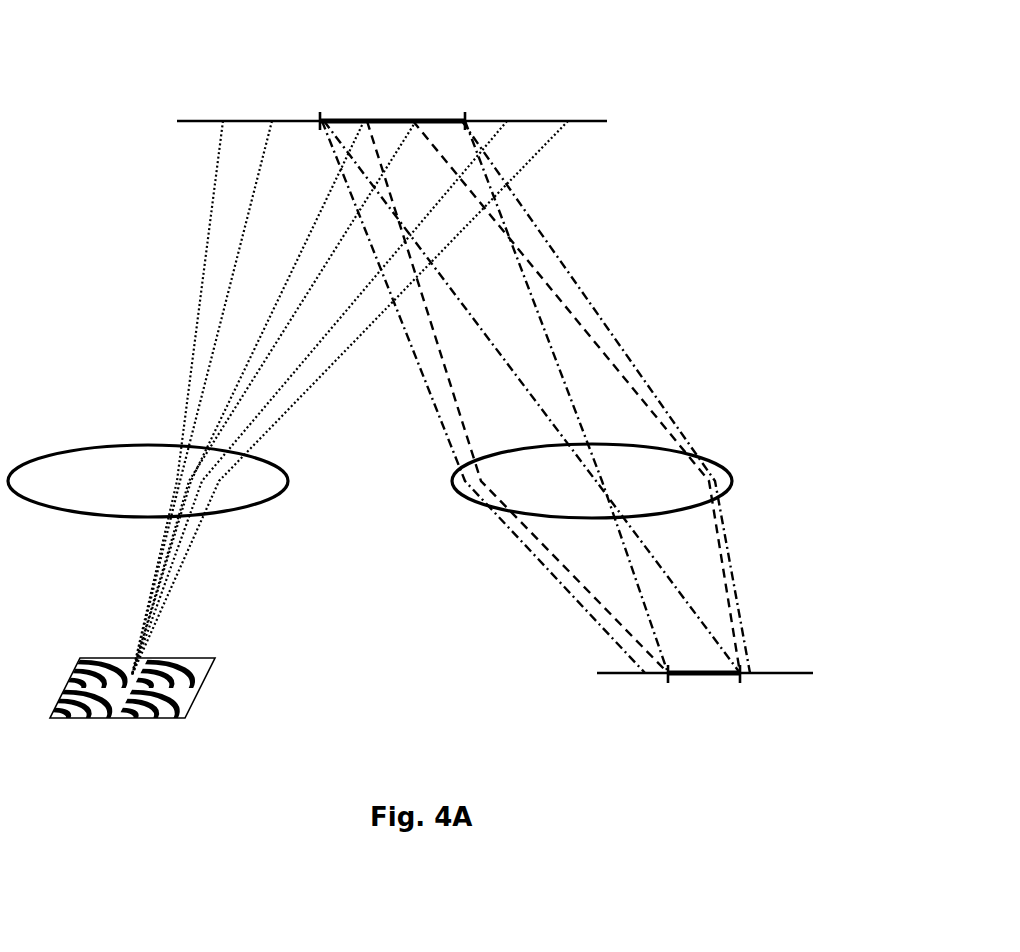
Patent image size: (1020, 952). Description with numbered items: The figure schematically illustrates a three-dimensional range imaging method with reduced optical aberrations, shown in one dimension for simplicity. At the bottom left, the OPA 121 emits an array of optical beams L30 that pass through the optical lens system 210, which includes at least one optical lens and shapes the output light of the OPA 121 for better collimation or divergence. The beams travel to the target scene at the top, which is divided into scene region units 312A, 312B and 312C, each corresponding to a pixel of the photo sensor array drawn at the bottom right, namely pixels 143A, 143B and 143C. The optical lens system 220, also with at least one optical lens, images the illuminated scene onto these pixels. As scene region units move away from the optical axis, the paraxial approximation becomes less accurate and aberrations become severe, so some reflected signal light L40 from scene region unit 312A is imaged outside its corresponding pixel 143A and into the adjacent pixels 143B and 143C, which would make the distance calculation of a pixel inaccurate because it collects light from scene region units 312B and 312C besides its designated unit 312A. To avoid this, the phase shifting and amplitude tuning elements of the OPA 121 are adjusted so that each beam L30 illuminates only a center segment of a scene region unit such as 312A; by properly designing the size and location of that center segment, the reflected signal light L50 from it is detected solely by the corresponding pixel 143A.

The scene region unit 312A is at (354, 117).
The scene region unit 312B is at (197, 118).
The scene region unit 312C is at (592, 118).
The optical beams L30 is at (283, 273).
The reflected signal light L40 is at (728, 292).
The reflected signal light L50 is at (434, 329).
The optical lens system 210 is at (29, 461).
The optical lens system 220 is at (736, 466).
The OPA 121 is at (196, 695).
The pixel 143A is at (699, 677).
The pixel 143B is at (791, 677).
The pixel 143C is at (616, 677).